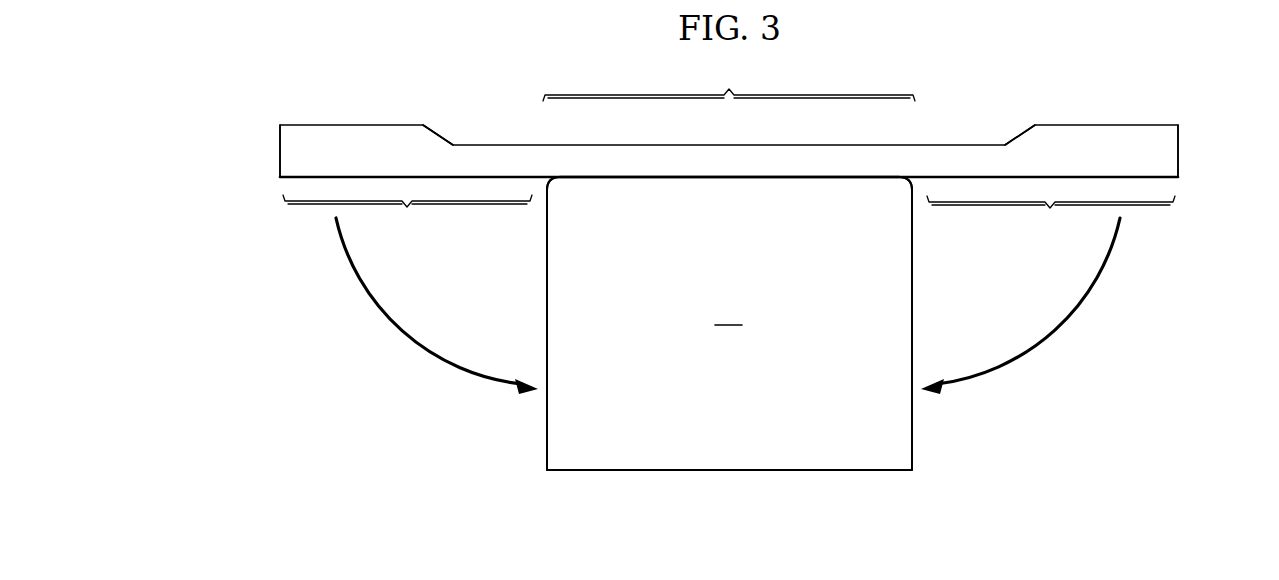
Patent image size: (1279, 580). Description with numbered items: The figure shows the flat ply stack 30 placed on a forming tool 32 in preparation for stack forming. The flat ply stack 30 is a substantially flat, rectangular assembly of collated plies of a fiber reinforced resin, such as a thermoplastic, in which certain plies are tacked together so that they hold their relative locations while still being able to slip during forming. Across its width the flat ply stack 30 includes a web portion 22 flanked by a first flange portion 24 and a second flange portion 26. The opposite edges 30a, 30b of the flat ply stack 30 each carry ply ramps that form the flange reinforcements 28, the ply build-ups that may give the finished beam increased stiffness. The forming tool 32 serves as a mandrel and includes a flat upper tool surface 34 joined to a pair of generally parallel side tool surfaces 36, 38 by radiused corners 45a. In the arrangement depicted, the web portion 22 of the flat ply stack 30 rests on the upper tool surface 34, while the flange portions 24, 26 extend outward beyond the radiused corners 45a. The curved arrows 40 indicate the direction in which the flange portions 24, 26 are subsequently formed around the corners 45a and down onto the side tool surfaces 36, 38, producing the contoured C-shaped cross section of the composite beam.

The web portion 22 is at (729, 82).
The flange portion 24 is at (407, 216).
The flange portion 26 is at (1051, 217).
The flange reinforcement 28 is at (328, 114).
The flat ply stack 30 is at (1014, 46).
The edge of flat ply stack 30a is at (258, 135).
The edge of flat ply stack 30b is at (1200, 135).
The forming tool 32 is at (729, 323).
The upper tool surface 34 is at (792, 160).
The side tool surface 36 is at (530, 305).
The side tool surface 38 is at (929, 305).
The folding direction 40 is at (389, 327).
The radiused corner 45a is at (531, 180).